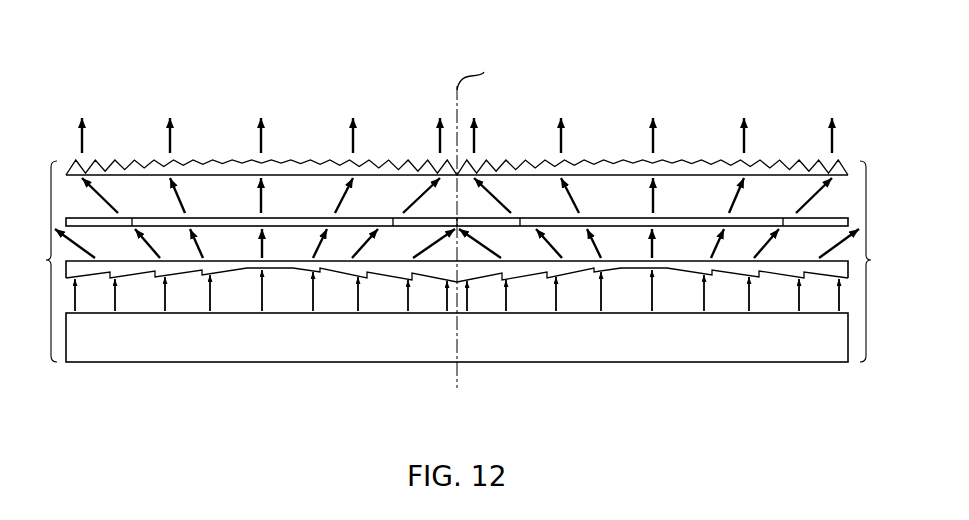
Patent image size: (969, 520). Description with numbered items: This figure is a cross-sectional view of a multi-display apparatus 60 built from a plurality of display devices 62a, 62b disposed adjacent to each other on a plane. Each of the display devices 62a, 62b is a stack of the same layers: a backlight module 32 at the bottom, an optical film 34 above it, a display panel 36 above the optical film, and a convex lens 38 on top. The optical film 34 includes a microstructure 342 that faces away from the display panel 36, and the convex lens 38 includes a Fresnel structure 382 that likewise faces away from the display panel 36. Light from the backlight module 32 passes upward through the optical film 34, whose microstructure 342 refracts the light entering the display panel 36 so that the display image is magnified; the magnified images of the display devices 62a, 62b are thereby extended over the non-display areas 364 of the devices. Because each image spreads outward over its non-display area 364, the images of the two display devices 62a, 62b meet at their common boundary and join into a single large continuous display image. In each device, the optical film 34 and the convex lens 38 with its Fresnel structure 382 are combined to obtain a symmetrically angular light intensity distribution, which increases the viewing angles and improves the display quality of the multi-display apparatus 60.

The multi-display apparatus 60 is at (57, 55).
The backlight module 32 is at (271, 346).
The optical film 34 is at (70, 284).
The microstructure 342 is at (133, 269).
The display panel 36 is at (140, 215).
The non-display area 364 is at (82, 223).
The convex lens 38 is at (208, 156).
The Fresnel structure 382 is at (325, 160).
The display device 62a is at (35, 261).
The display device 62b is at (881, 261).